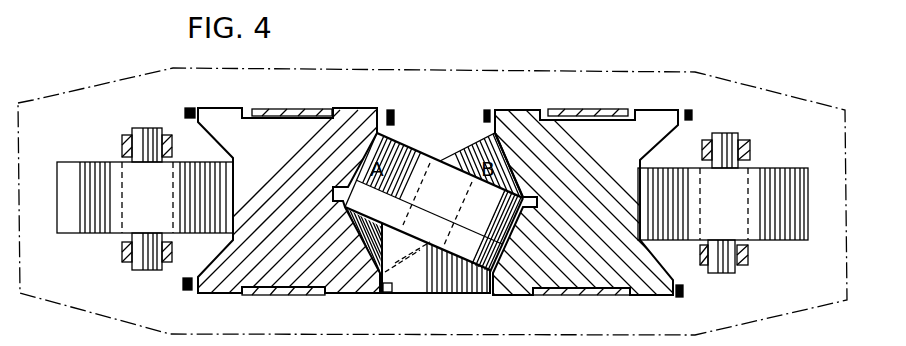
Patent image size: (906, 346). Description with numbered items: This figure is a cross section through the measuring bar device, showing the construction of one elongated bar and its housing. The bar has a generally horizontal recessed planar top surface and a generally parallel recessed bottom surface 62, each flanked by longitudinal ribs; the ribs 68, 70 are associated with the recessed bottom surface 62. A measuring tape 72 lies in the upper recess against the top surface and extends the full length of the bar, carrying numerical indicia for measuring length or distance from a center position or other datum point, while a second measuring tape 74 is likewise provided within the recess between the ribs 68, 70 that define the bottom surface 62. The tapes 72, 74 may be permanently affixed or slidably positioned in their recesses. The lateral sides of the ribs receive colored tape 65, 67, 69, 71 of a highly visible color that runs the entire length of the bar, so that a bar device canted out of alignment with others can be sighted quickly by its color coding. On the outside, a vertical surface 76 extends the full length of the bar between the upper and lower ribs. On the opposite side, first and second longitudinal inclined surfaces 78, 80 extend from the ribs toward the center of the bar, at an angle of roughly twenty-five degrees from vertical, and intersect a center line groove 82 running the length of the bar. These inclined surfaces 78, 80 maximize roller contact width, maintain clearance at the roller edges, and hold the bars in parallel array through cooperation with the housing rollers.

The recessed bottom surface 62 is at (280, 296).
The colored tape 65 is at (188, 110).
The colored tape 67 is at (397, 113).
The longitudinal rib 68 is at (648, 296).
The colored tape 69 is at (683, 296).
The longitudinal rib 70 is at (365, 102).
The colored tape 71 is at (185, 292).
The measuring tape 72 is at (291, 109).
The measuring tape 74 is at (552, 294).
The outside vertical surface 76 is at (641, 207).
The first longitudinal inclined surface 78 is at (517, 168).
The second longitudinal inclined surface 80 is at (510, 242).
The center line groove 82 is at (540, 202).